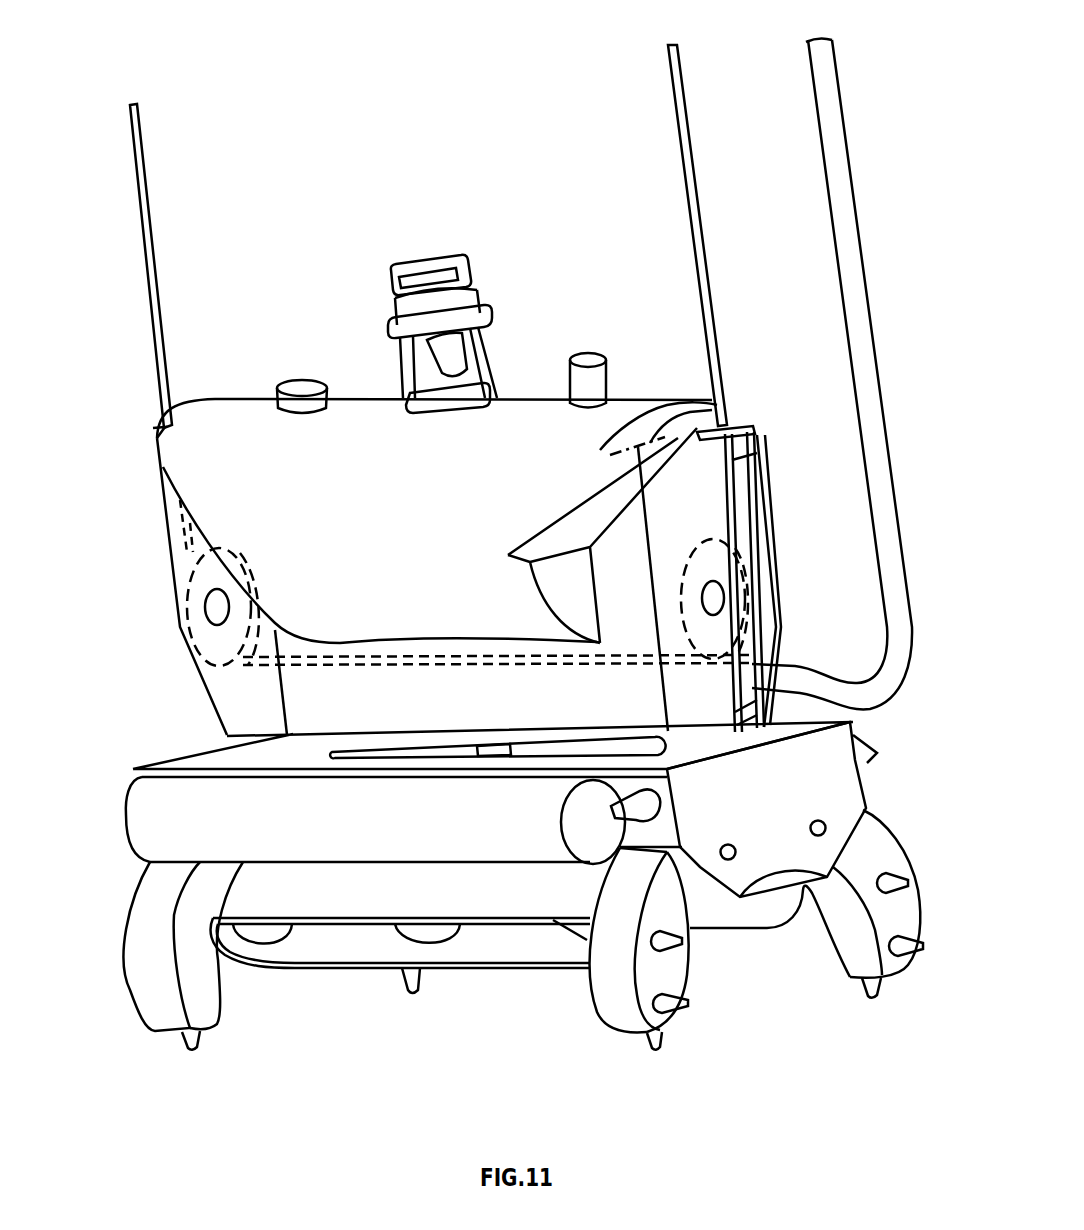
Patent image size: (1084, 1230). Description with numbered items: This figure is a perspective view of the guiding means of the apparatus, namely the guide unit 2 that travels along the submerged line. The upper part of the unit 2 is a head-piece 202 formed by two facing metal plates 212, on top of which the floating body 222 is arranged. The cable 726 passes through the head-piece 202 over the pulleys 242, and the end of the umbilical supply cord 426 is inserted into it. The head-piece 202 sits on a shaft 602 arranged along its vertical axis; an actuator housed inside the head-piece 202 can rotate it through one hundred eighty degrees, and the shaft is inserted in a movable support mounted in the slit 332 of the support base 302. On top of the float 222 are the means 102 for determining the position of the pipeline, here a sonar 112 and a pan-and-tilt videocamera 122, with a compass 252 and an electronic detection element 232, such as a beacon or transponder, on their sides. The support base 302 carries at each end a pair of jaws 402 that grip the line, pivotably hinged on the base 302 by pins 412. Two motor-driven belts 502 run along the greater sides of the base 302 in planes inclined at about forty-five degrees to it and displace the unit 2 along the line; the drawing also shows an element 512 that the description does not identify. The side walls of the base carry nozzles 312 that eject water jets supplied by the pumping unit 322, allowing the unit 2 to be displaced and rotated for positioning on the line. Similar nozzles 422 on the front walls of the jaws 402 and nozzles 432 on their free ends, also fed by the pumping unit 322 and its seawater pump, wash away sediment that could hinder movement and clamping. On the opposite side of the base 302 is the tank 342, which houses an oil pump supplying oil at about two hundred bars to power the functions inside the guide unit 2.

The guide unit 2 is at (158, 524).
The means for determining the position of the pipeline 102 is at (390, 355).
The sonar 112 is at (450, 255).
The videocamera 122 is at (463, 358).
The head-piece 202 is at (158, 489).
The facing metal plates 212 is at (760, 500).
The floating body 222 is at (237, 413).
The electronic detection element 232 is at (590, 358).
The pulleys 242 is at (205, 658).
The compass 252 is at (302, 380).
The support base 302 is at (845, 797).
The nozzles 312 is at (622, 822).
The pumping unit 322 is at (131, 801).
The slit 332 is at (597, 746).
The tank 342 is at (866, 739).
The jaws 402 is at (598, 990).
The pins 412 is at (811, 826).
The nozzles 422 is at (685, 1007).
The umbilical supply cord 426 is at (856, 207).
The nozzles 432 is at (650, 1040).
The motor-driven belts 502 is at (309, 958).
The bar 512 is at (457, 930).
The shaft 602 is at (497, 755).
The cable 726 is at (689, 141).